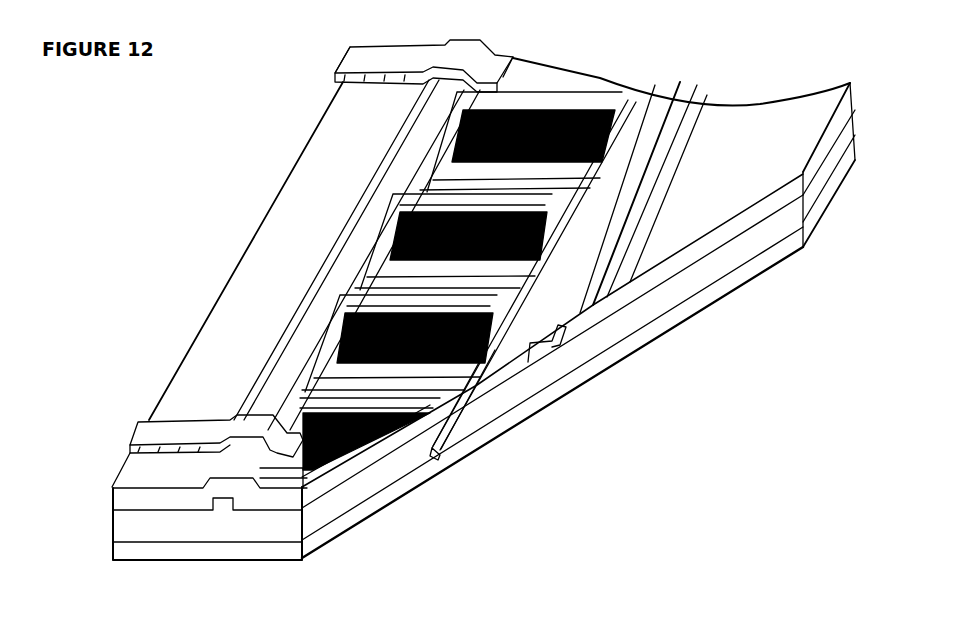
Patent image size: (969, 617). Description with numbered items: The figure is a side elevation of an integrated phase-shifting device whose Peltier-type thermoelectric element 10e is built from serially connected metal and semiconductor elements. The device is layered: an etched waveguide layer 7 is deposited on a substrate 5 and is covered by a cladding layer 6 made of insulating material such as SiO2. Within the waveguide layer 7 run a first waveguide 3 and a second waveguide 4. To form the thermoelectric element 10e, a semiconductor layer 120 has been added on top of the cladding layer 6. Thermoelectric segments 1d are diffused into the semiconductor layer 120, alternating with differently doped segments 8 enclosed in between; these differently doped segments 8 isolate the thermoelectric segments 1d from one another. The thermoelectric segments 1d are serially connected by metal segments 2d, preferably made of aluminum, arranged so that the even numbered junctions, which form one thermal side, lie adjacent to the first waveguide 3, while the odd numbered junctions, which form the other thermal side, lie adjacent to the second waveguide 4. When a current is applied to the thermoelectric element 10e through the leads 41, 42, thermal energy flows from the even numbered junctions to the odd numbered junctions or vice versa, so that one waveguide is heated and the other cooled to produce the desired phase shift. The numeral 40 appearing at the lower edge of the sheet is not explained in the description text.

The lead 42 is at (372, 70).
The lead 41 is at (160, 428).
The thermoelectric element 10e is at (322, 213).
The semiconductor layer 120 is at (340, 320).
The segment 1d is at (357, 442).
The metal segment 2d is at (437, 447).
The differently doped segment 8 is at (470, 370).
The second waveguide 4 is at (543, 347).
The substrate 5 is at (127, 552).
The waveguide layer 7 is at (188, 512).
The first waveguide 3 is at (220, 505).
The cladding layer 6 is at (263, 500).
The connector 40 is at (223, 588).